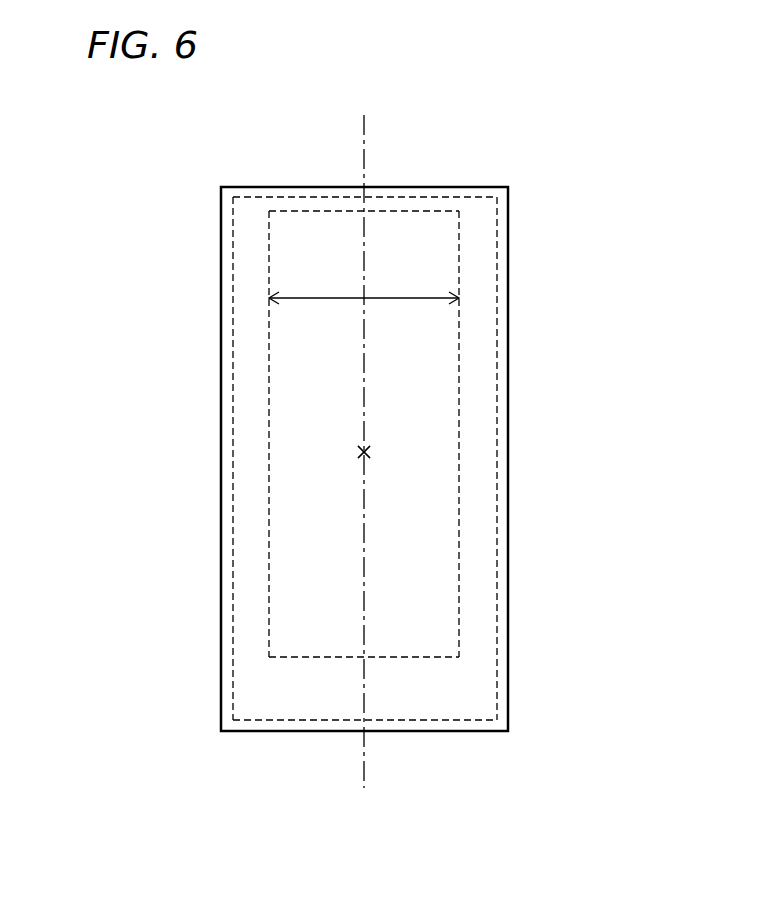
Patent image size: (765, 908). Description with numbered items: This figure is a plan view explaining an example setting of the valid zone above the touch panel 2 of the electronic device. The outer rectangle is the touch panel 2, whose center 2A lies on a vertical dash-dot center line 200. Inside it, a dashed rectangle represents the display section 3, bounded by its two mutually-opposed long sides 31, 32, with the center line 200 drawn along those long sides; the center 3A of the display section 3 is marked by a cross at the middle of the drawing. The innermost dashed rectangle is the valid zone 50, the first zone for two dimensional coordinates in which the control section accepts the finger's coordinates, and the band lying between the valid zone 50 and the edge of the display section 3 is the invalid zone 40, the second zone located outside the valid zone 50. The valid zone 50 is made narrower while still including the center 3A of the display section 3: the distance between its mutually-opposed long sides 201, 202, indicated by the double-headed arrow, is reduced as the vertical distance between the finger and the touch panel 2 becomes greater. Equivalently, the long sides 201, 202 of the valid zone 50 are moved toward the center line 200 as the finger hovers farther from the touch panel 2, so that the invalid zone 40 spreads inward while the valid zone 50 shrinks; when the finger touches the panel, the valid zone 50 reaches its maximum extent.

The touch panel 2 is at (508, 396).
The center of the touch panel 2A is at (250, 466).
The display section 3 is at (397, 458).
The center of the display section 3A is at (364, 452).
The long side of the display section 31 is at (496, 448).
The long side of the display section 32 is at (234, 588).
The invalid zone 40 is at (483, 678).
The valid zone 50 is at (403, 434).
The long side of the valid zone 201 is at (458, 362).
The long side of the valid zone 202 is at (269, 399).
The center line 200 is at (364, 774).